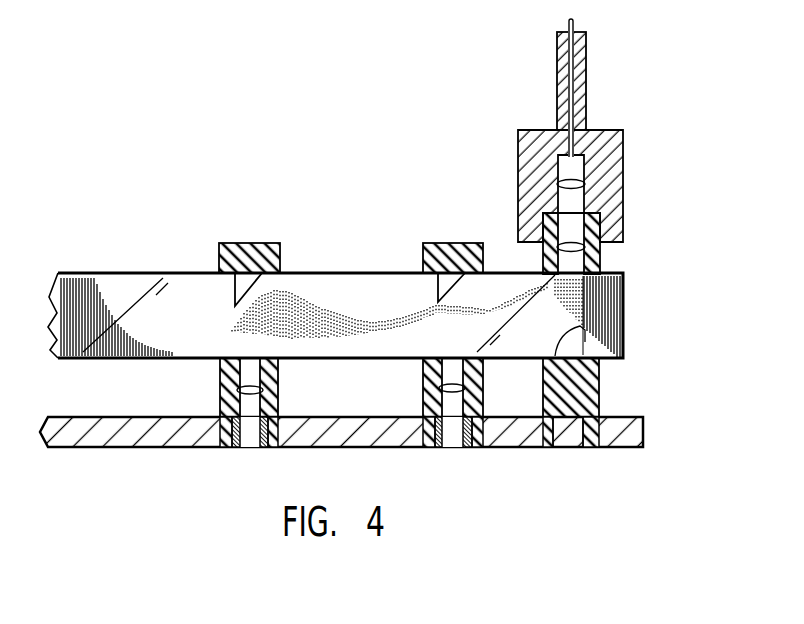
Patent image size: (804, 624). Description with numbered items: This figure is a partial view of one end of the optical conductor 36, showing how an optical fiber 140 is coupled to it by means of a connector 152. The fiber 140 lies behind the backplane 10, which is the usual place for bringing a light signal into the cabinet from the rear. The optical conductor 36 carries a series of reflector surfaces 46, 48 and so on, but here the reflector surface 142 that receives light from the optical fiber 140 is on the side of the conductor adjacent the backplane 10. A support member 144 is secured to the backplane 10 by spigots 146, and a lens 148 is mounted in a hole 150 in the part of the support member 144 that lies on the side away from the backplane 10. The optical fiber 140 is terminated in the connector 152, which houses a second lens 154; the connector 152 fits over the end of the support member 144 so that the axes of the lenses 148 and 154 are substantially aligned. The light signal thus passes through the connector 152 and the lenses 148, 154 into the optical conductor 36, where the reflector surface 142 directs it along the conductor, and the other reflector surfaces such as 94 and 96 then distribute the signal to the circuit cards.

The backplane 10 is at (93, 449).
The optical conductor 36 is at (122, 303).
The reflector surface 46 is at (240, 305).
The reflector surface 48 is at (452, 290).
The reflector surface 94 is at (233, 243).
The outlet fitting 96 is at (445, 243).
The optical fiber 140 is at (568, 21).
The reflector surface 142 is at (580, 323).
The support member 144 is at (580, 393).
The spigot 146 is at (548, 449).
The lens 148 is at (590, 238).
The hole 150 is at (580, 263).
The connector 152 is at (606, 152).
The second lens 154 is at (582, 187).